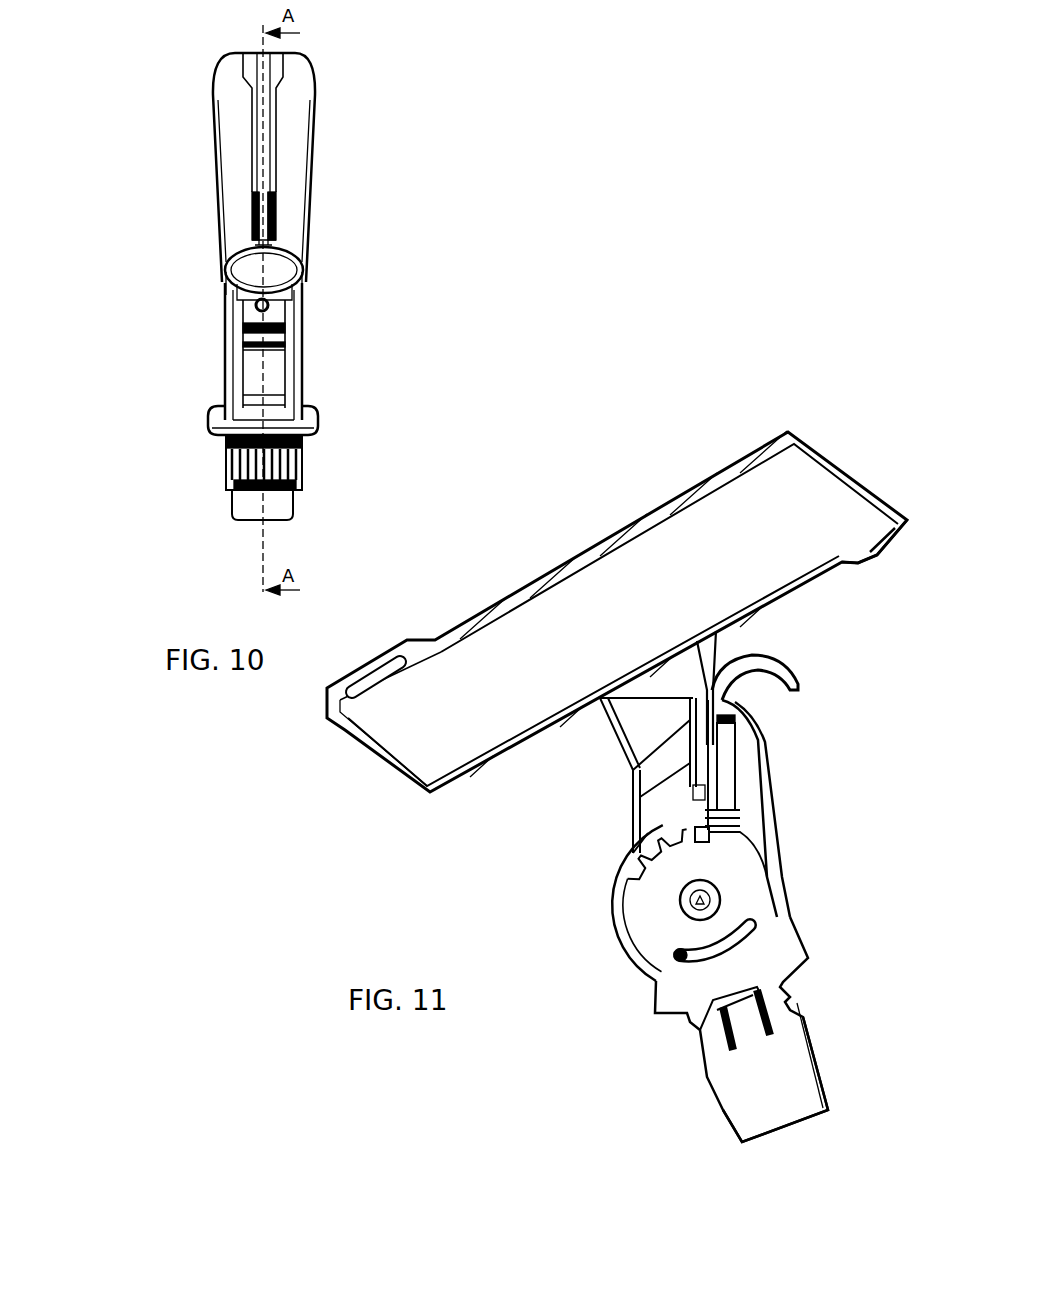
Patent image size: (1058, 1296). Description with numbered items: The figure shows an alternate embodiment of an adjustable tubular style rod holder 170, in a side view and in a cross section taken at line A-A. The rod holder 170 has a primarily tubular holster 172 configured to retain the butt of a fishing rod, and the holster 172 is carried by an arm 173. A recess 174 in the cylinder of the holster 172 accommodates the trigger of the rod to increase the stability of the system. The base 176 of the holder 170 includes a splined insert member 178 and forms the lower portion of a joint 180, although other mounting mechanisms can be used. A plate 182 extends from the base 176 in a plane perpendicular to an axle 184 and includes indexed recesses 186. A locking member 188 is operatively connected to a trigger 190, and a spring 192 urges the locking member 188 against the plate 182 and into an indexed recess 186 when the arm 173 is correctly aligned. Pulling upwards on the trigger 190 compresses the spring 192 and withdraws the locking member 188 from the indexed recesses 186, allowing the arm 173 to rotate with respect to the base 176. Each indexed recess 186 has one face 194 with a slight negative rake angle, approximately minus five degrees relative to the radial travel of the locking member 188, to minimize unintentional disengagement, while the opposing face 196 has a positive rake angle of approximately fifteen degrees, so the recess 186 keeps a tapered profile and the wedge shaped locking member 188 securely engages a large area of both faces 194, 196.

In FIG. 10, the rod holder 170 is at (180, 96).
In FIG. 11, the rod holder 170 is at (521, 560).
In FIG. 10, the holster 172 is at (311, 149).
In FIG. 11, the holster 172 is at (663, 503).
In FIG. 10, the arm 173 is at (226, 281).
In FIG. 11, the arm 173 is at (759, 732).
In FIG. 11, the recess 174 is at (893, 540).
In FIG. 10, the base 176 is at (320, 421).
In FIG. 11, the base 176 is at (683, 1024).
In FIG. 10, the splined insert member 178 is at (222, 468).
In FIG. 11, the splined insert member 178 is at (727, 1113).
In FIG. 11, the joint 180 is at (845, 943).
In FIG. 10, the plate 182 is at (270, 368).
In FIG. 11, the plate 182 is at (632, 930).
In FIG. 11, the axle 184 is at (690, 906).
In FIG. 10, the indexed recesses 186 is at (238, 328).
In FIG. 11, the indexed recesses 186 is at (650, 856).
In FIG. 11, the locking member 188 is at (712, 845).
In FIG. 11, the trigger 190 is at (803, 686).
In FIG. 11, the spring 192 is at (741, 817).
In FIG. 11, the face 194 is at (711, 838).
In FIG. 11, the opposing face 196 is at (632, 830).